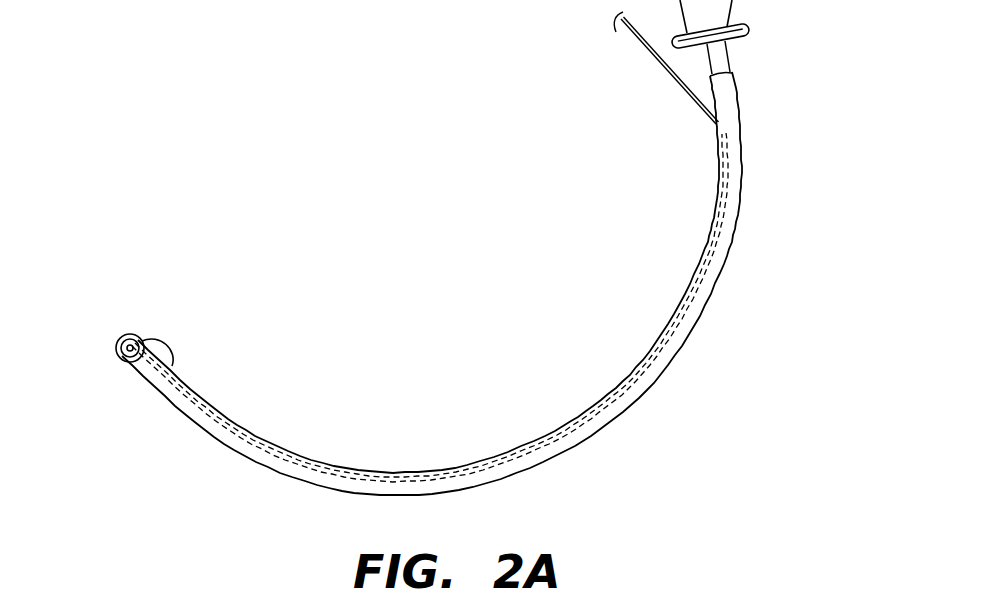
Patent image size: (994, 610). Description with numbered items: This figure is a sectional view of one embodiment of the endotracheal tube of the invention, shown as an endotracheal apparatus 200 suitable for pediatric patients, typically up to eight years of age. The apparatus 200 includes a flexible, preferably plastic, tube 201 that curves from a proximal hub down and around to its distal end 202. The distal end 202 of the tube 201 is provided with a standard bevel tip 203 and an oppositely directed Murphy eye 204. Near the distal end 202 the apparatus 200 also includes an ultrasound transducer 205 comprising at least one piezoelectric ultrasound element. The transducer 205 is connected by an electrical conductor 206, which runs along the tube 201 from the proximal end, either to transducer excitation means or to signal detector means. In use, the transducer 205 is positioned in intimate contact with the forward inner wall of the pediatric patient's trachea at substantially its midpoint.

The endotracheal apparatus 200 is at (386, 247).
The tube 201 is at (727, 178).
The distal end 202 is at (129, 330).
The bevel tip 203 is at (116, 339).
The Murphy eye 204 is at (130, 345).
The ultrasound transducer 205 is at (160, 348).
The electrical conductor 206 is at (670, 62).